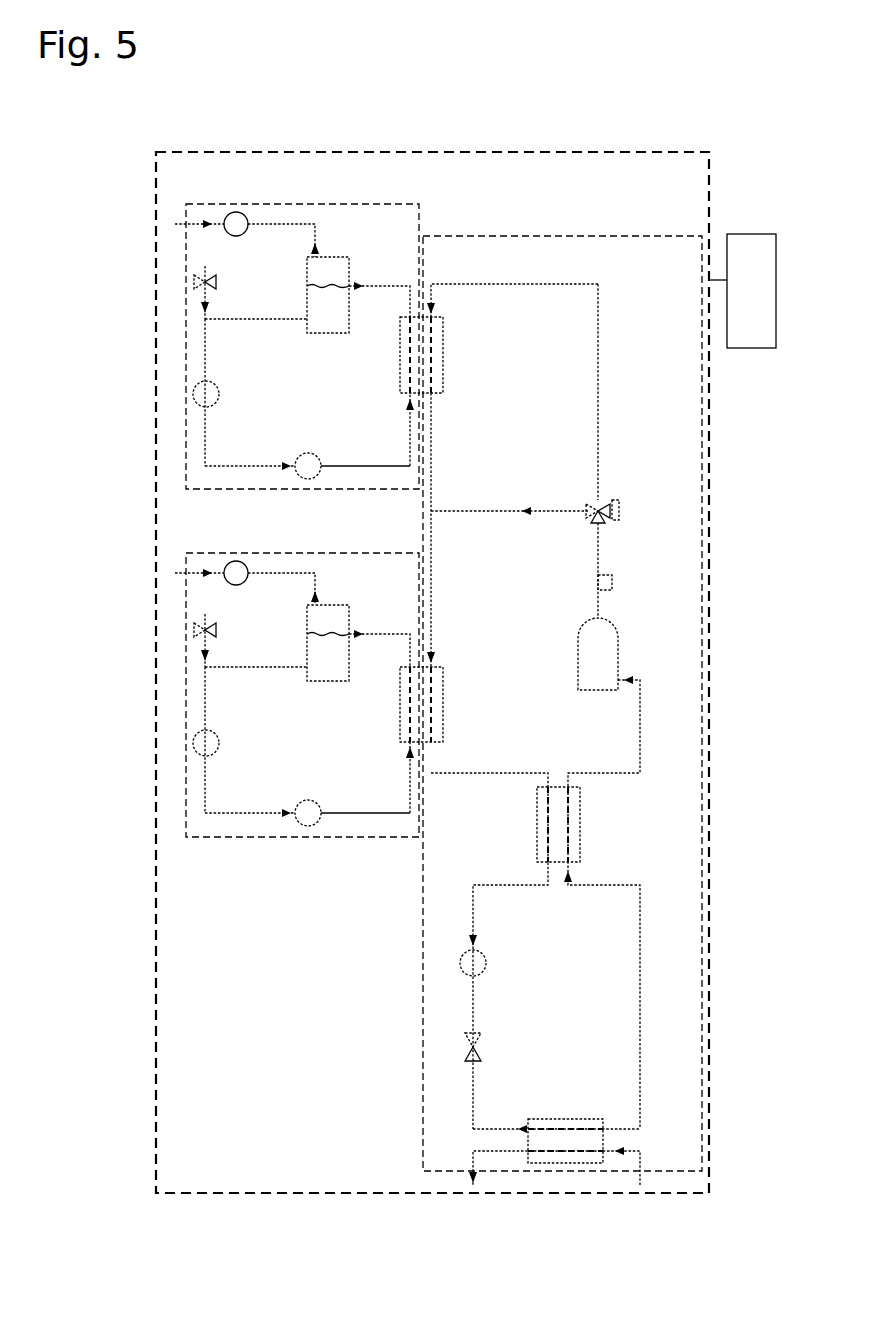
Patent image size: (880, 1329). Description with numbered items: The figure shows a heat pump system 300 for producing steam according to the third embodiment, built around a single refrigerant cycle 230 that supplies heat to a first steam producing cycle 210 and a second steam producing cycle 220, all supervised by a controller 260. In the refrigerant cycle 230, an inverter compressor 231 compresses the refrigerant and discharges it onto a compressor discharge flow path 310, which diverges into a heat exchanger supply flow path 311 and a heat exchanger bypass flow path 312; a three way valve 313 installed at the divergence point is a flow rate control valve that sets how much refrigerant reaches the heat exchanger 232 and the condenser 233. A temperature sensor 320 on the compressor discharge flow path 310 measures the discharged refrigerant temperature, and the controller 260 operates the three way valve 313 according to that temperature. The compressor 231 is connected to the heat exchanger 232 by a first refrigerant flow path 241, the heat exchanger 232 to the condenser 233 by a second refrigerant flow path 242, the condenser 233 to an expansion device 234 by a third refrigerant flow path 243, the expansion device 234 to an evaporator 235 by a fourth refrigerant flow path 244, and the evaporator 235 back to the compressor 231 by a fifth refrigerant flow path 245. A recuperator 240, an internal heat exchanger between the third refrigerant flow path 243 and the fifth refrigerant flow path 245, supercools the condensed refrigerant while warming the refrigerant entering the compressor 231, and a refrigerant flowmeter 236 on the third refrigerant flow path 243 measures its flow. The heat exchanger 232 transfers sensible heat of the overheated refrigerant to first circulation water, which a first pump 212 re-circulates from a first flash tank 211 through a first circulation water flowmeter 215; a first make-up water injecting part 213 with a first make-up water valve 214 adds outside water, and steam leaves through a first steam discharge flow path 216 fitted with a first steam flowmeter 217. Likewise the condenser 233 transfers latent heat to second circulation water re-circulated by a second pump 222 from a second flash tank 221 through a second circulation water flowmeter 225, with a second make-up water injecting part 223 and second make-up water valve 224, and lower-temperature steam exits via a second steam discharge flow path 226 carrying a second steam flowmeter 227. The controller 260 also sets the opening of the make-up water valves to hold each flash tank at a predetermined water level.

The heat pump system for producing steam 300 is at (496, 124).
The controller 260 is at (745, 234).
The refrigerant cycle 230 is at (628, 236).
The first steam producing cycle 210 is at (388, 204).
The first flash tank 211 is at (340, 257).
The first pump 212 is at (219, 392).
The first make-up water injecting part 213 is at (210, 295).
The first make-up water valve 214 is at (215, 278).
The first circulation water flowmeter 215 is at (308, 453).
The first steam discharge flow path 216 is at (300, 224).
The first steam flowmeter 217 is at (236, 212).
The second steam producing cycle 220 is at (373, 553).
The second flash tank 221 is at (340, 605).
The second pump 222 is at (219, 741).
The second make-up water injecting part 223 is at (210, 644).
The second make-up water valve 224 is at (215, 626).
The second circulation water flowmeter 225 is at (308, 800).
The second steam discharge flow path 226 is at (300, 573).
The second steam flowmeter 227 is at (236, 561).
The compressor 231 is at (580, 625).
The heat exchanger 232 is at (443, 355).
The condenser 233 is at (443, 705).
The expansion device 234 is at (482, 1054).
The evaporator 235 is at (578, 1119).
The refrigerant flowmeter 236 is at (486, 963).
The recuperator 240 is at (580, 826).
The first refrigerant flow path 241 is at (517, 284).
The second refrigerant flow path 242 is at (435, 550).
The third refrigerant flow path 243 is at (503, 775).
The fourth refrigerant flow path 244 is at (477, 1110).
The fifth refrigerant flow path 245 is at (618, 775).
The compressor discharge flow path 310 is at (600, 550).
The heat exchanger supply flow path 311 is at (600, 395).
The heat exchanger bypass flow path 312 is at (497, 511).
The three way valve 313 is at (607, 500).
The temperature sensor 320 is at (612, 583).